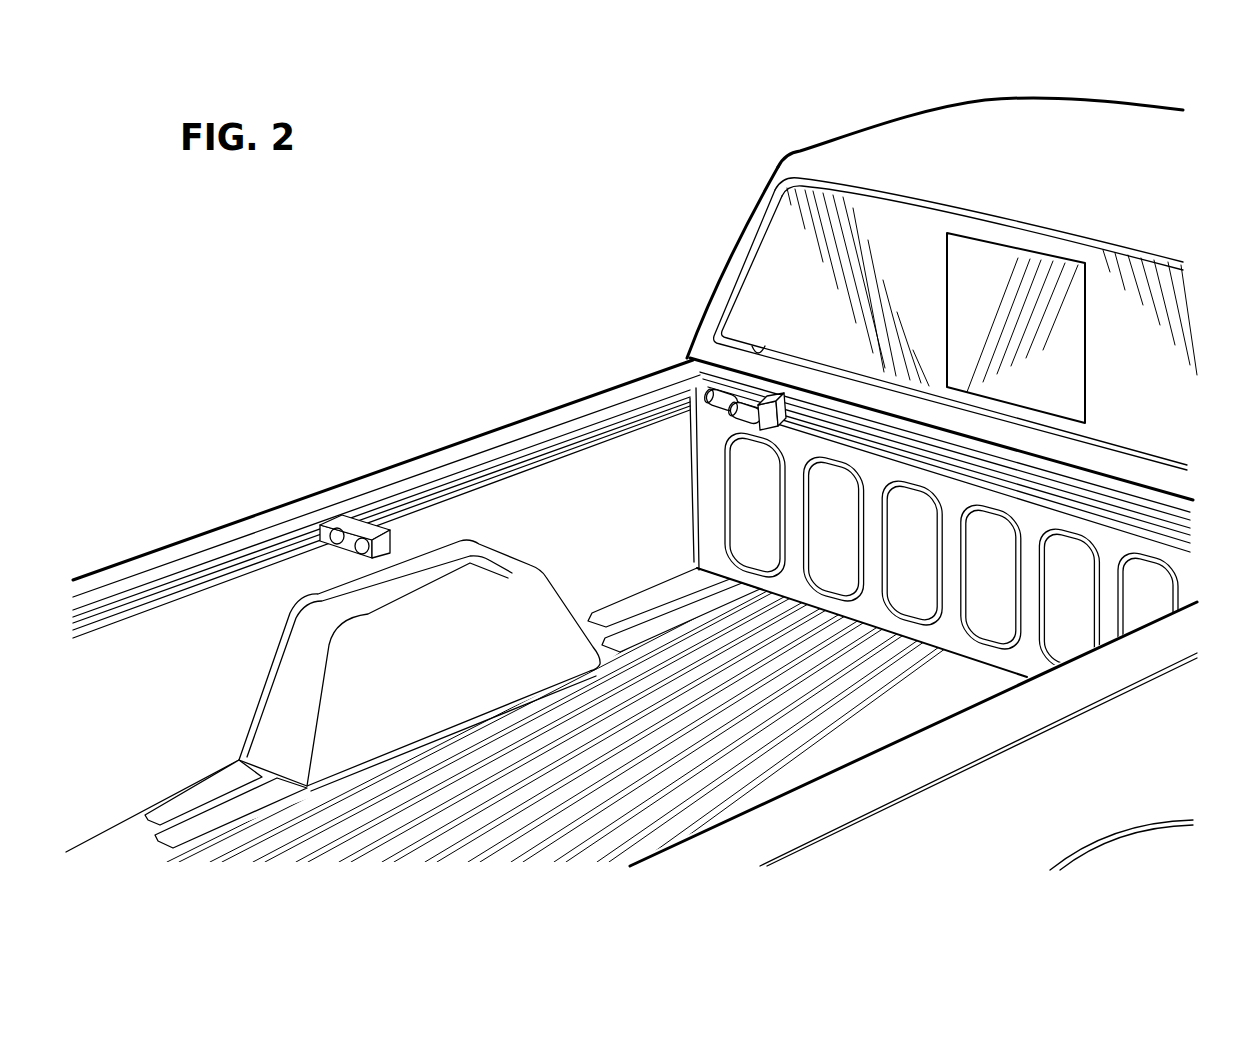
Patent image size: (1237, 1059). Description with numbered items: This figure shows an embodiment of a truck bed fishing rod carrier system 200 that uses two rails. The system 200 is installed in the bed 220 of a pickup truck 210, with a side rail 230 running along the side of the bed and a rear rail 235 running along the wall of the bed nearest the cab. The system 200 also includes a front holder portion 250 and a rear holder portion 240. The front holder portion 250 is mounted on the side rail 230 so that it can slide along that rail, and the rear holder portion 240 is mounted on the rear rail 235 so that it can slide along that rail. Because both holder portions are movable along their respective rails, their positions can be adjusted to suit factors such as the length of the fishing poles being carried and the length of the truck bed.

The truck bed fishing rod carrier system 200 is at (474, 304).
The pickup truck 210 is at (718, 259).
The bed 220 is at (401, 463).
The side rail 230 is at (625, 436).
The rear rail 235 is at (997, 485).
The rear holder portion 240 is at (770, 431).
The front holder portion 250 is at (379, 552).